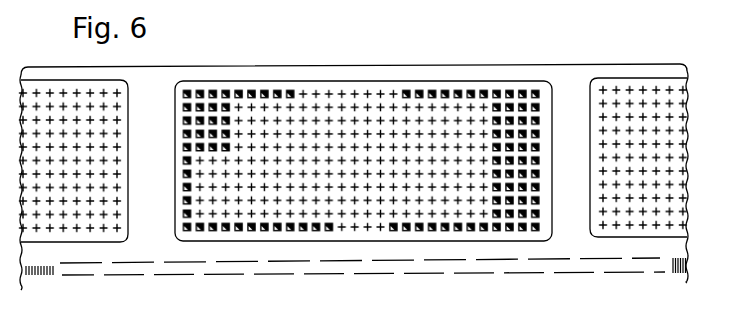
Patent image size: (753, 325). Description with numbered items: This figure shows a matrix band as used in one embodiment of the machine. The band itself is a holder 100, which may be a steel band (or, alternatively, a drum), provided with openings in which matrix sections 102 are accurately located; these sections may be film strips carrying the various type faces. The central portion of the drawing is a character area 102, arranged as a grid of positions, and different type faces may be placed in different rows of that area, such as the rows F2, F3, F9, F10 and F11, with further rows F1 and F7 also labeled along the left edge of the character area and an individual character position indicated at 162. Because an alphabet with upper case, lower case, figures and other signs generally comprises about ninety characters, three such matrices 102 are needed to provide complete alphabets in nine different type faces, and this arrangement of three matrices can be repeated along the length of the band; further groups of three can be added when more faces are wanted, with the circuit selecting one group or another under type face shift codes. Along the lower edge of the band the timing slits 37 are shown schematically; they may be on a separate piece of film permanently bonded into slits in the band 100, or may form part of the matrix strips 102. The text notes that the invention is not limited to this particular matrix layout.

The holder 100 is at (345, 65).
The matrix section 102 is at (510, 80).
The first row element 162 is at (183, 96).
The timing slits 37 is at (671, 265).
The row F1 is at (340, 68).
The row F2 is at (183, 107).
The row F3 is at (183, 120).
The row F7 is at (183, 174).
The row F9 is at (183, 200).
The row F10 is at (183, 213).
The row F11 is at (183, 227).